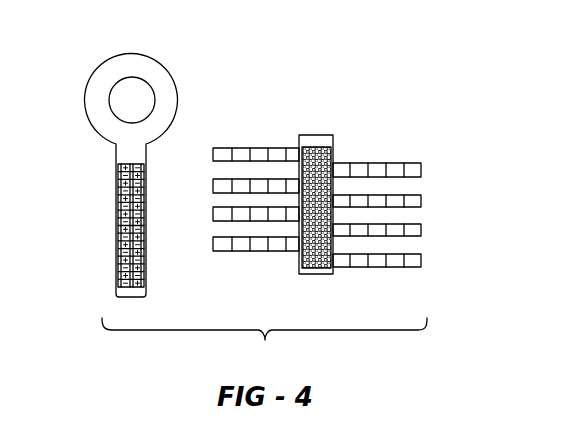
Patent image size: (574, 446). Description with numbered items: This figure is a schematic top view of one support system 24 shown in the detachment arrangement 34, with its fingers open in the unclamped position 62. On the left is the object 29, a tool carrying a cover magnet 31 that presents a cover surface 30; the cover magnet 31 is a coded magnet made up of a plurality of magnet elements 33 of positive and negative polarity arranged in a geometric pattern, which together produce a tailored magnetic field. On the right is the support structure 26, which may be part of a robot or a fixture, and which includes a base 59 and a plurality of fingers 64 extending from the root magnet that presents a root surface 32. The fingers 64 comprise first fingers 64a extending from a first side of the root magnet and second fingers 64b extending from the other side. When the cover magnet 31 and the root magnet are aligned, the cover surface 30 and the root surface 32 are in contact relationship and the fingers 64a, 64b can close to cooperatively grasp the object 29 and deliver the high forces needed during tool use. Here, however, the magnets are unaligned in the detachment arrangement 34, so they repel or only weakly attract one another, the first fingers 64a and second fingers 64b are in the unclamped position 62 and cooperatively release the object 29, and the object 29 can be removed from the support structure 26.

The support system 24 is at (264, 342).
The support structure 26 is at (333, 273).
The object 29 is at (112, 65).
The cover surface 30 is at (115, 266).
The cover magnet 31 is at (120, 228).
The root surface 32 is at (304, 160).
The magnet elements 33 is at (120, 203).
The detachment arrangement 34 is at (200, 60).
The base 59 is at (310, 142).
The unclamped position 62 is at (431, 149).
The finger 64 is at (460, 163).
The first finger 64a is at (222, 152).
The second finger 64b is at (408, 197).